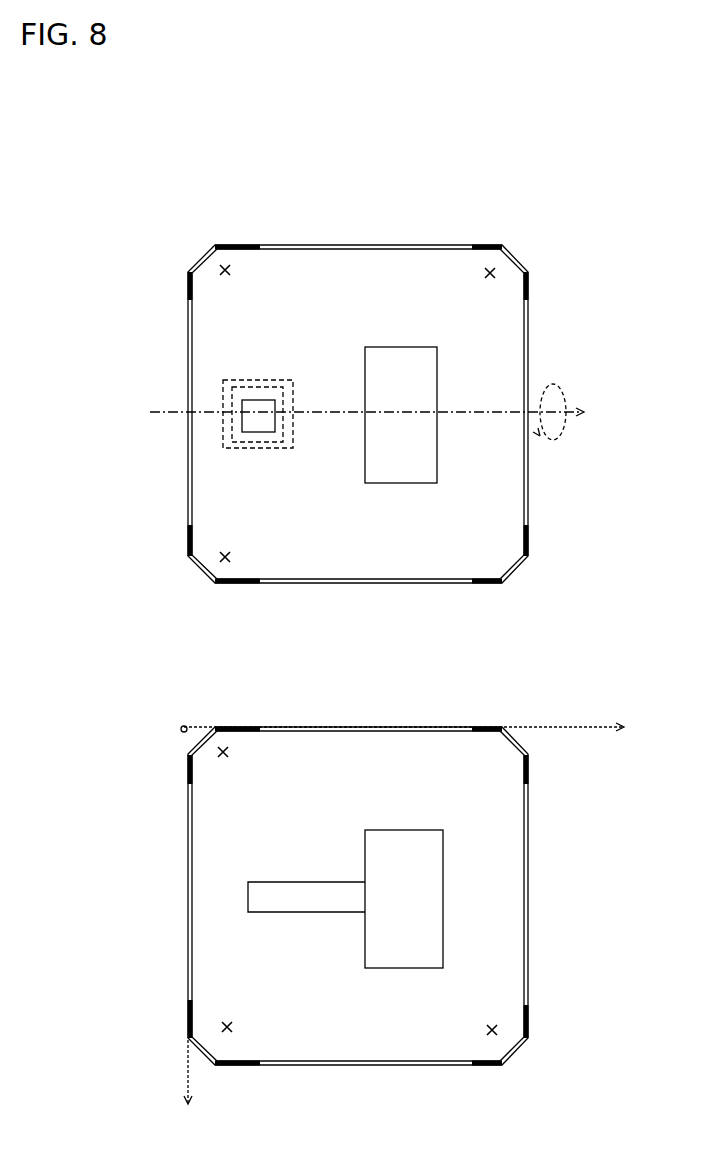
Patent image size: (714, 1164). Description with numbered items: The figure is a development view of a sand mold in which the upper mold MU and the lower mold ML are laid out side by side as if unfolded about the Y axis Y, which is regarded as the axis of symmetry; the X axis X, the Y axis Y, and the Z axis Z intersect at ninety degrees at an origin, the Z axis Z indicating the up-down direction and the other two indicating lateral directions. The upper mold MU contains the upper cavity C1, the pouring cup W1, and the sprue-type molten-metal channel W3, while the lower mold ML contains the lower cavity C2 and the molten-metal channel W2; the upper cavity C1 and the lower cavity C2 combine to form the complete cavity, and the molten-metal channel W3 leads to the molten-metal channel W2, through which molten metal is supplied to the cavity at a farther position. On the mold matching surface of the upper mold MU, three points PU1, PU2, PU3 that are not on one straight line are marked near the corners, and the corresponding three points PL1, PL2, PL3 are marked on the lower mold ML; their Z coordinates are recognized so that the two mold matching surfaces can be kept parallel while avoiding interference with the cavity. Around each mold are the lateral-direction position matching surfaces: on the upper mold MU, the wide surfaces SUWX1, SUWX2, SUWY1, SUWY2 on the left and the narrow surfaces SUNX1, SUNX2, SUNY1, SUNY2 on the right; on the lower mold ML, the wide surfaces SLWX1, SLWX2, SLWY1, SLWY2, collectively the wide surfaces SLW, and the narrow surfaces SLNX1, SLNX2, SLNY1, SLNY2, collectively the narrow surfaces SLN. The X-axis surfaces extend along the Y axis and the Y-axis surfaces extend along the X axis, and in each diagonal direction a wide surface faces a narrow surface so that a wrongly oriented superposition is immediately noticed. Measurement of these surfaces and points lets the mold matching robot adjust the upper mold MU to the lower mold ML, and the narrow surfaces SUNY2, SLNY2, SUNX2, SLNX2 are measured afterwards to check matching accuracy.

The upper mold MU is at (540, 233).
The lower mold ML is at (537, 905).
The upper cavity C1 is at (360, 410).
The lower cavity C2 is at (378, 830).
The pouring cup W1 is at (228, 382).
The molten-metal channel W2 is at (266, 880).
The molten-metal channel (sprue) W3 is at (266, 400).
The first point on upper-mold mold matching surface PU1 is at (222, 548).
The second point on upper-mold mold matching surface PU2 is at (221, 262).
The third point on upper-mold mold matching surface PU3 is at (502, 271).
The first point on lower-mold mold matching surface PL1 is at (206, 764).
The second point on lower-mold mold matching surface PL2 is at (237, 1027).
The third point on lower-mold mold matching surface PL3 is at (497, 1022).
The upper wide first X-axis lateral-direction position matching surface SUWX1 is at (239, 587).
The upper wide second X-axis lateral-direction position matching surface SUWX2 is at (246, 240).
The upper wide first Y-axis lateral-direction position matching surface SUWY1 is at (186, 535).
The upper wide second Y-axis lateral-direction position matching surface SUWY2 is at (186, 296).
The upper narrow first X-axis lateral-direction position matching surface SUNX1 is at (478, 586).
The upper narrow second X-axis lateral-direction position matching surface SUNX2 is at (474, 243).
The upper narrow first Y-axis lateral-direction position matching surface SUNY1 is at (532, 535).
The upper narrow second Y-axis lateral-direction position matching surface SUNY2 is at (532, 297).
The lower wide first X-axis lateral-direction position matching surface SLWX1 is at (248, 722).
The lower wide second X-axis lateral-direction position matching surface SLWX2 is at (240, 1068).
The lower wide first Y-axis lateral-direction position matching surface SLWY1 is at (186, 778).
The lower wide second Y-axis lateral-direction position matching surface SLWY2 is at (186, 1019).
The lower narrow first X-axis lateral-direction position matching surface SLNX1 is at (476, 725).
The lower narrow second X-axis lateral-direction position matching surface SLNX2 is at (478, 1068).
The lower narrow first Y-axis lateral-direction position matching surface SLNY1 is at (532, 777).
The lower narrow second Y-axis lateral-direction position matching surface SLNY2 is at (532, 1020).
The wide lateral-direction position matching surfaces of the lower mold SLW is at (185, 1048).
The narrow lateral-direction position matching surfaces of the lower mold SLN is at (530, 1065).
The Z axis Z is at (180, 728).
The X axis X is at (177, 1081).
The Y axis Y is at (413, 726).